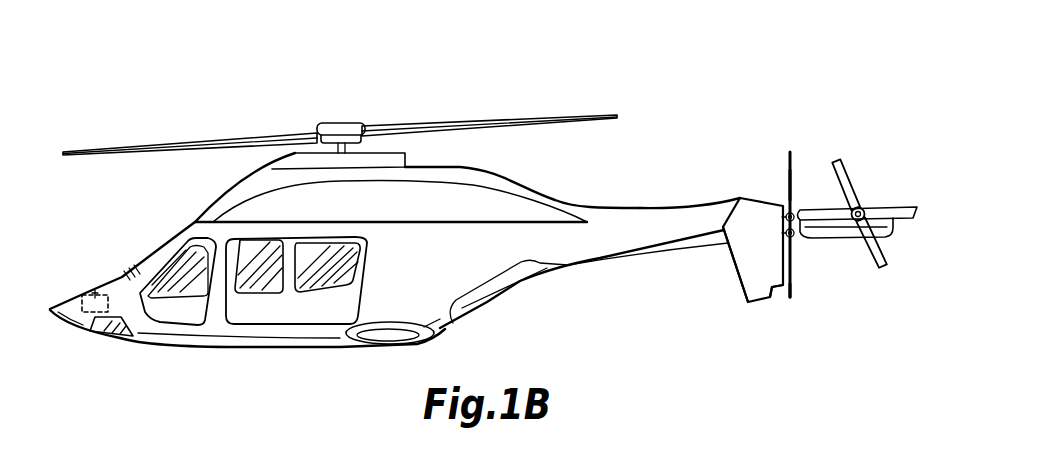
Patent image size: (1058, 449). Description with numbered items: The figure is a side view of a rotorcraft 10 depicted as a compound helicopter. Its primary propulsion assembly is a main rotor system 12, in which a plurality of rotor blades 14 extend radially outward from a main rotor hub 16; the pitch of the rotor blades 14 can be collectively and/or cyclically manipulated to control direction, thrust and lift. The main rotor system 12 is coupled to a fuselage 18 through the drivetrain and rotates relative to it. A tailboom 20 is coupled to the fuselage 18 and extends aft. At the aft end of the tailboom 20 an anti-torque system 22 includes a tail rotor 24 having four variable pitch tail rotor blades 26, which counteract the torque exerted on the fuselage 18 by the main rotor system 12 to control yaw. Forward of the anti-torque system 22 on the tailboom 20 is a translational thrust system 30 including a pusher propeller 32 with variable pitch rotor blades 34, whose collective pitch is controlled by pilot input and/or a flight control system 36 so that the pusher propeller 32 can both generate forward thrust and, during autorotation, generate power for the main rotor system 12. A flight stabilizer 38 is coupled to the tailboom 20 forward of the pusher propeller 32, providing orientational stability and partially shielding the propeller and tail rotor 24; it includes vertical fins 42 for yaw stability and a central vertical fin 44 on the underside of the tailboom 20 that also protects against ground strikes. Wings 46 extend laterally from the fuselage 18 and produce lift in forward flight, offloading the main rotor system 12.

The rotorcraft 10 is at (501, 80).
The main rotor system 12 is at (340, 105).
The rotor blades 14 is at (232, 138).
The main rotor hub 16 is at (338, 122).
The fuselage 18 is at (253, 349).
The tailboom 20 is at (597, 250).
The anti-torque system 22 is at (883, 214).
The tail rotor 24 is at (835, 159).
The tail rotor blades 26 is at (885, 268).
The translational thrust system 30 is at (779, 162).
The pusher propeller 32 is at (792, 184).
The rotor blades 34 is at (792, 288).
The flight control system 36 is at (92, 282).
The flight stabilizer 38 is at (743, 277).
The vertical fins 42 is at (773, 283).
The central vertical fin 44 is at (725, 264).
The wings 46 is at (375, 334).